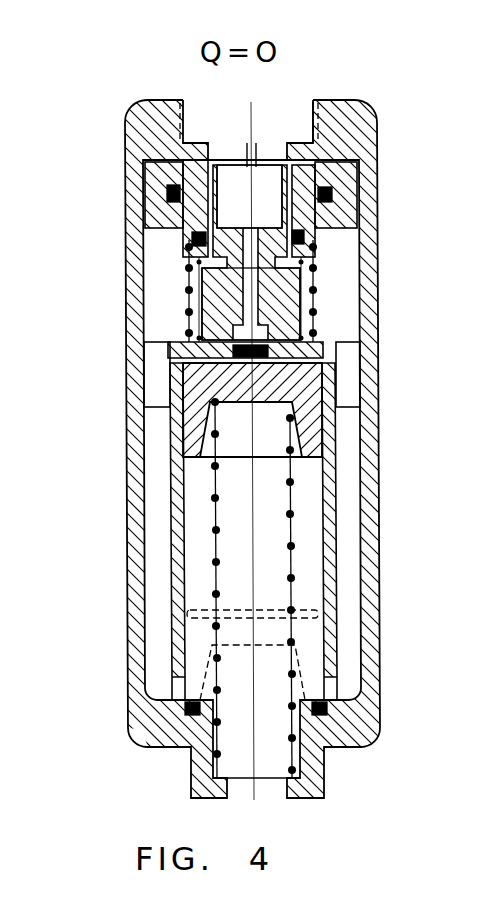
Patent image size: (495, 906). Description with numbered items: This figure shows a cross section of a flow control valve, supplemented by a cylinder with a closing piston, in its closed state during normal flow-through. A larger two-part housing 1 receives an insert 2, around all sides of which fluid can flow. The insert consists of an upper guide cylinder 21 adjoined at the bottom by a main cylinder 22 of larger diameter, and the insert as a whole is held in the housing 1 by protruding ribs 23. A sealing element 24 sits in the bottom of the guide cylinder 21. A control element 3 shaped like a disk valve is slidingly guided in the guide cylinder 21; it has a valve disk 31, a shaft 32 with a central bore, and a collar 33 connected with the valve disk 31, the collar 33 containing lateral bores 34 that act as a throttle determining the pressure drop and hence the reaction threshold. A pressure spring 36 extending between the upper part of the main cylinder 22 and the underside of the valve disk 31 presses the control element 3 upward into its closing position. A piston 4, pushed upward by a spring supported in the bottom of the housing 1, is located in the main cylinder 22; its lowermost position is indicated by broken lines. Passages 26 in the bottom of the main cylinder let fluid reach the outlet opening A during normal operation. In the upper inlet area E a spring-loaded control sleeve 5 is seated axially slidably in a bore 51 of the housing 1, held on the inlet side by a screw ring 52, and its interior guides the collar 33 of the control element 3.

The housing 1 is at (137, 687).
The insert 2 is at (177, 530).
The control element 3 is at (207, 250).
The piston 4 is at (187, 425).
The control sleeve 5 is at (168, 208).
The guide cylinder 21 is at (290, 324).
The main cylinder 22 is at (328, 533).
The protruding ribs 23 is at (305, 360).
The sealing element 24 is at (233, 346).
The passages 26 is at (332, 685).
The valve disk 31 is at (292, 253).
The shaft 32 is at (262, 293).
The collar 33 is at (250, 156).
The lateral bores 34 is at (227, 238).
The pressure spring 36 is at (315, 316).
The bore 51 is at (318, 203).
The screw ring 52 is at (320, 122).
The inlet area E is at (207, 118).
The outlet opening A is at (240, 767).